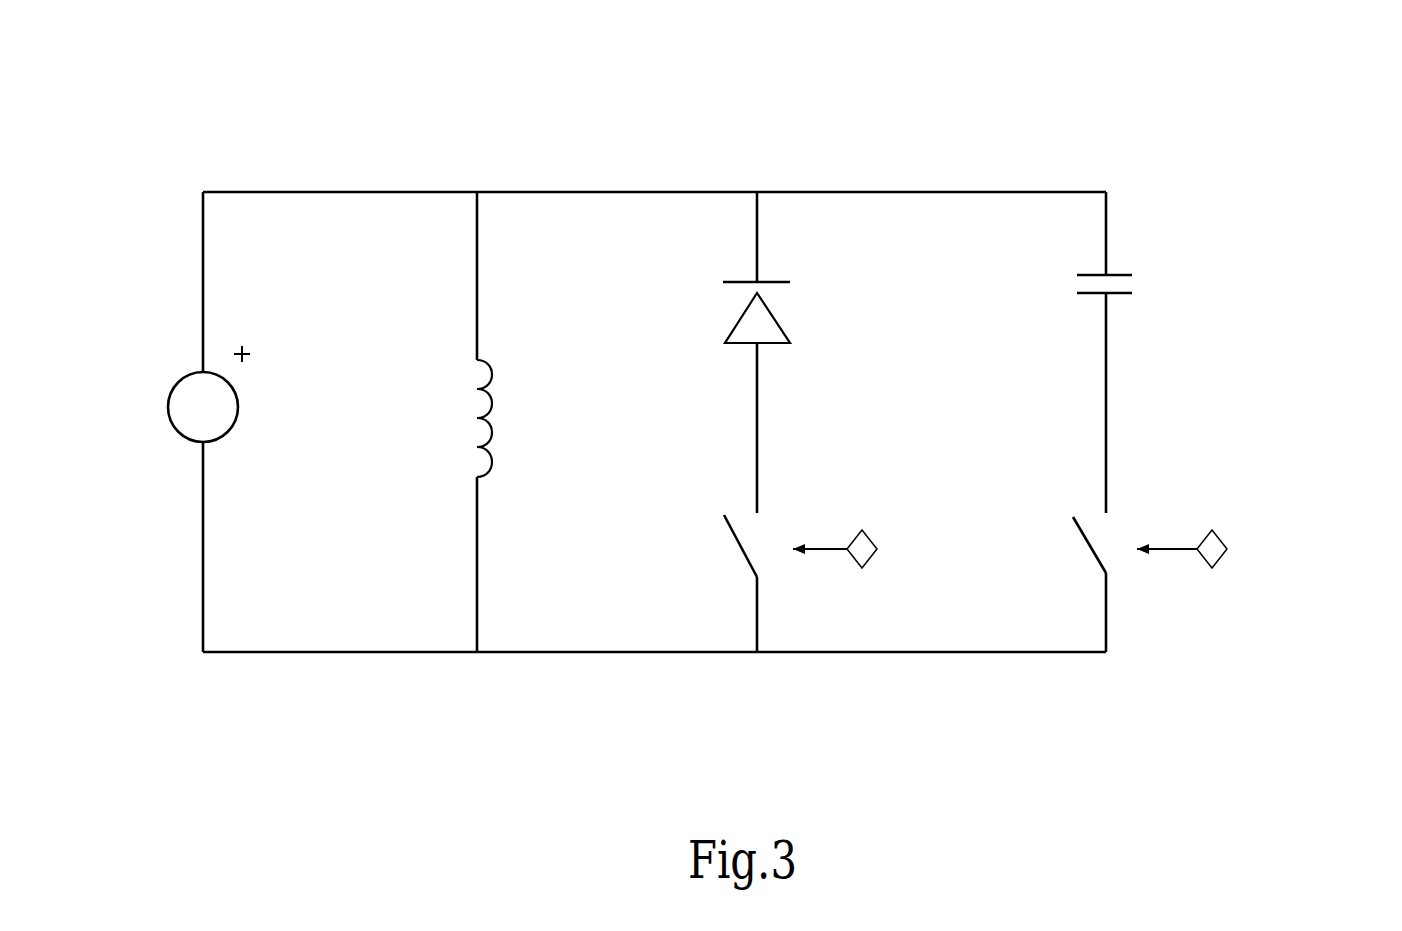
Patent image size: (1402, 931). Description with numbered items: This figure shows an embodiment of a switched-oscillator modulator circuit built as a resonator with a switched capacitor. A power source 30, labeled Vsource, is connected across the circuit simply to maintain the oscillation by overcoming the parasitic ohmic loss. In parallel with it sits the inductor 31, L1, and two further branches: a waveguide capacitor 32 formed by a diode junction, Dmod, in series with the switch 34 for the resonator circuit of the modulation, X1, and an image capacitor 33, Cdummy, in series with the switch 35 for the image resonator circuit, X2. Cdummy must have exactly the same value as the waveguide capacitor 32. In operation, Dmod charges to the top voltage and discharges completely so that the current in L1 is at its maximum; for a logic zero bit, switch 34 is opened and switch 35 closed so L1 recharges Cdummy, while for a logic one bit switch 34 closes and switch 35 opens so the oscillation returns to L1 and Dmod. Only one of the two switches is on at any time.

The power source 30 is at (160, 395).
The inductor L1 31 is at (500, 368).
The waveguide capacitor formed by diode junction 32 is at (734, 270).
The image capacitor 33 is at (1084, 247).
The switch for the resonator circuit of the modulation 34 is at (724, 557).
The switch for the image resonator circuit 35 is at (1045, 653).